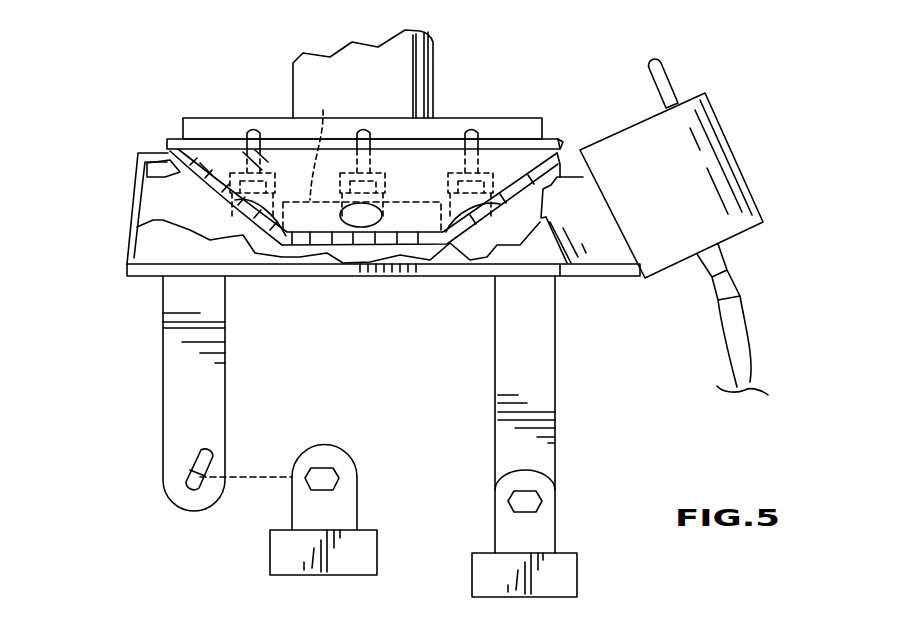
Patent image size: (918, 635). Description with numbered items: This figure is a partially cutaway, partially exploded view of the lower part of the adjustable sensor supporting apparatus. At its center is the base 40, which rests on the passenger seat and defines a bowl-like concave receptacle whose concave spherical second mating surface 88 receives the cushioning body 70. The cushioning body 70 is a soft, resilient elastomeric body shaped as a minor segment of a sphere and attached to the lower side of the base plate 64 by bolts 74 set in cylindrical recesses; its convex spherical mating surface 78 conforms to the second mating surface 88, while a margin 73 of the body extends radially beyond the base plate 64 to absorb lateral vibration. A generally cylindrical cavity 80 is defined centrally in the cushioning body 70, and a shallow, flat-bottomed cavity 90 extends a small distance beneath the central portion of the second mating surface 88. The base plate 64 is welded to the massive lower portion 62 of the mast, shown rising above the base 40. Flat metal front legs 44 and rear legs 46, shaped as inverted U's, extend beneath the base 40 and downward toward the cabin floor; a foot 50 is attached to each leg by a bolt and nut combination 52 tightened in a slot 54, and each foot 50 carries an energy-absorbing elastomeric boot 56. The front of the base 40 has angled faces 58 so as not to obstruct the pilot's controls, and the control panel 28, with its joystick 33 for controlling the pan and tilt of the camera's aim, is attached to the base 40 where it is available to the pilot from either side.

The control panel 28 is at (730, 130).
The joystick 33 is at (668, 66).
The base 40 is at (135, 205).
The front legs 44 is at (558, 397).
The rear legs 46 is at (225, 350).
The foot 50 is at (357, 502).
The bolt and nut combination 52 is at (323, 470).
The slot 54 is at (183, 463).
The boot 56 is at (270, 552).
The angled faces 58 is at (602, 253).
The lower portion 62 is at (435, 60).
The base plate 64 is at (212, 137).
The cushioning body 70 is at (217, 160).
The margin of the cushioning body 73 is at (178, 137).
The bolts 74 is at (260, 128).
The convex spherical mating surface 78 is at (165, 172).
The cylindrical cavity 80 is at (321, 142).
The concave spherical second mating surface 88 is at (516, 180).
The flat-bottomed cavity 90 is at (420, 228).